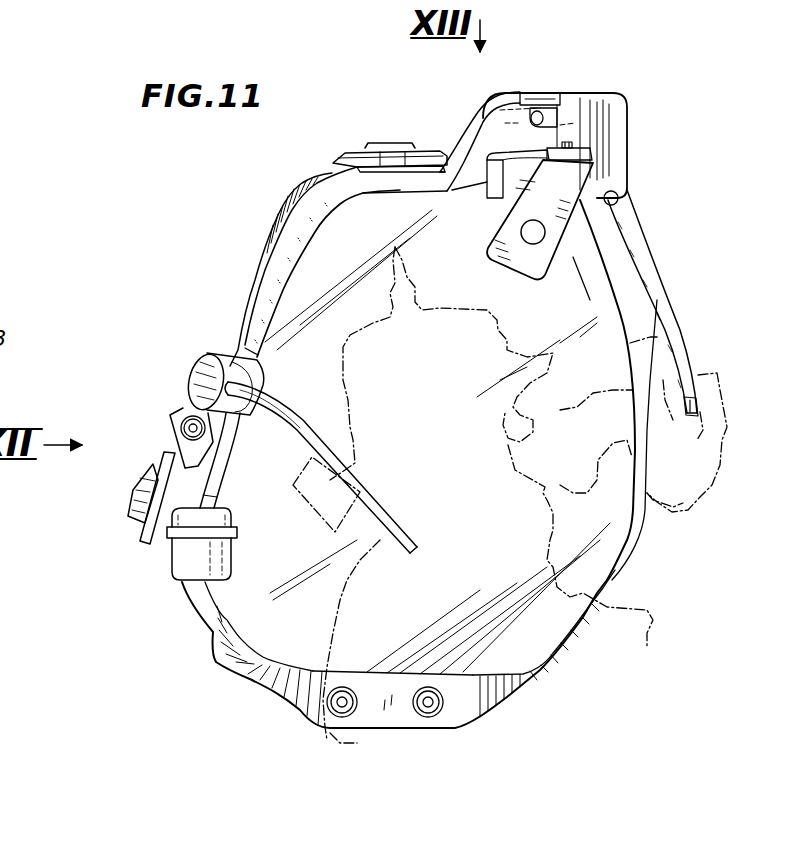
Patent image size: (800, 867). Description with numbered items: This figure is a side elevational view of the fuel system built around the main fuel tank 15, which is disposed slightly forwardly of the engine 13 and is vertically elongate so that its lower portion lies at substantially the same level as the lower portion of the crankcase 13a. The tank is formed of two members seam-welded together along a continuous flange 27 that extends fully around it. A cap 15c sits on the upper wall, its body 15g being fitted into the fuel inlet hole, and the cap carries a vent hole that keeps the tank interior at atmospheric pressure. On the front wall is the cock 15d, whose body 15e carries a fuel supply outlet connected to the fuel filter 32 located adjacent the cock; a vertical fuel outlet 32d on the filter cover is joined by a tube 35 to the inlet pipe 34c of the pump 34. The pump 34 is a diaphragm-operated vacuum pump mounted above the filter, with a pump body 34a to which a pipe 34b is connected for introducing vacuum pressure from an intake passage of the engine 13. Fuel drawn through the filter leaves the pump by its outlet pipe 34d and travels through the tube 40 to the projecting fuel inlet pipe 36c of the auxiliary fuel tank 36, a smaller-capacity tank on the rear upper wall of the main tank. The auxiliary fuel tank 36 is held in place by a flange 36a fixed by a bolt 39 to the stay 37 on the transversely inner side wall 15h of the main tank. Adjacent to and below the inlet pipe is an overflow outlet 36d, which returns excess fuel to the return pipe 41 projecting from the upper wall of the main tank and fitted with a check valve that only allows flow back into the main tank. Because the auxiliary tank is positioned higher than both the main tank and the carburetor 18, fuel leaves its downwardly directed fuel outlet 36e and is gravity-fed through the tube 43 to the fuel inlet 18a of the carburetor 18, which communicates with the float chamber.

The engine 13 is at (502, 325).
The crankcase 13a is at (327, 740).
The main fuel tank 15 is at (255, 598).
The cap 15c is at (347, 150).
The cock 15d is at (139, 491).
The cock body 15e is at (167, 507).
The cap body 15g is at (373, 177).
The transversely inner side wall 15h is at (597, 267).
The carburetor 18 is at (728, 429).
The fuel inlet 18a is at (698, 398).
The flange 27 is at (583, 617).
The fuel filter 32 is at (183, 558).
The fuel outlet 32d is at (217, 490).
The pump 34 is at (250, 373).
The pump body 34a is at (200, 380).
The pipe 34b is at (320, 400).
The inlet pipe 34c is at (233, 430).
The outlet pipe 34d is at (243, 343).
The tube 35 is at (193, 463).
The auxiliary fuel tank 36 is at (613, 140).
The flange 36a is at (590, 148).
The fuel inlet pipe 36c is at (537, 90).
The overflow outlet 36d is at (518, 115).
The fuel outlet 36e is at (622, 198).
The stay 37 is at (515, 205).
The bolt 39 is at (568, 143).
The tube 40 is at (313, 227).
The return pipe 41 is at (555, 122).
The tube 43 is at (665, 308).